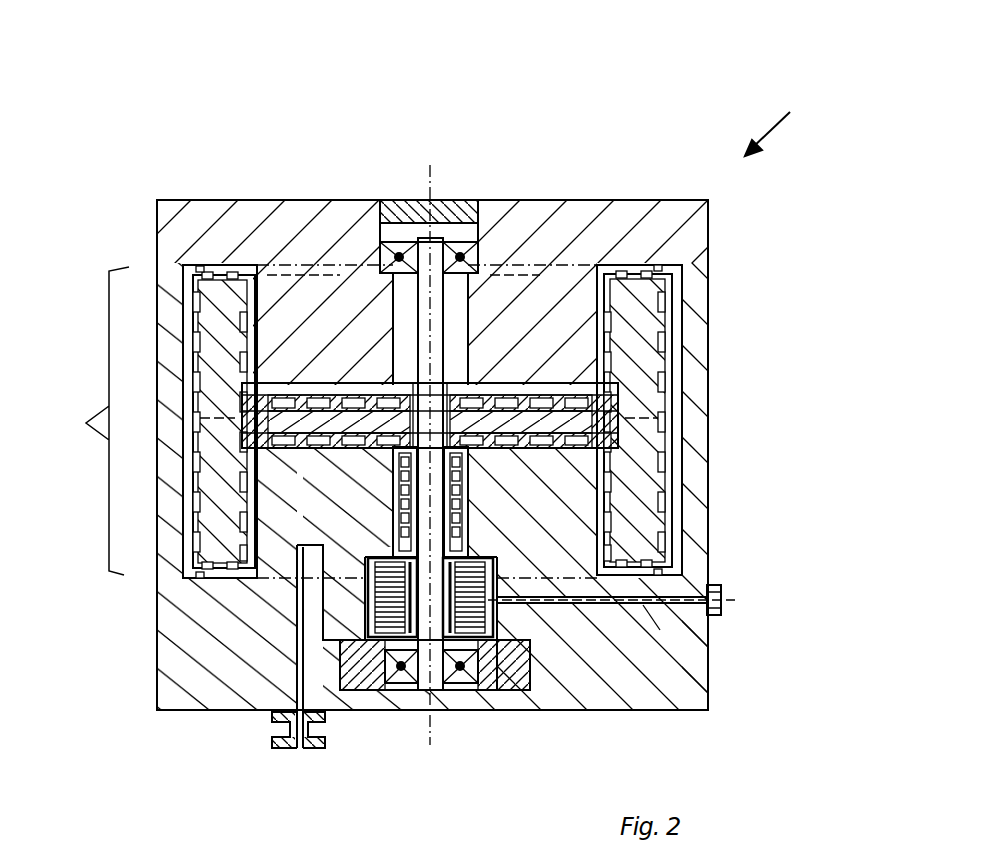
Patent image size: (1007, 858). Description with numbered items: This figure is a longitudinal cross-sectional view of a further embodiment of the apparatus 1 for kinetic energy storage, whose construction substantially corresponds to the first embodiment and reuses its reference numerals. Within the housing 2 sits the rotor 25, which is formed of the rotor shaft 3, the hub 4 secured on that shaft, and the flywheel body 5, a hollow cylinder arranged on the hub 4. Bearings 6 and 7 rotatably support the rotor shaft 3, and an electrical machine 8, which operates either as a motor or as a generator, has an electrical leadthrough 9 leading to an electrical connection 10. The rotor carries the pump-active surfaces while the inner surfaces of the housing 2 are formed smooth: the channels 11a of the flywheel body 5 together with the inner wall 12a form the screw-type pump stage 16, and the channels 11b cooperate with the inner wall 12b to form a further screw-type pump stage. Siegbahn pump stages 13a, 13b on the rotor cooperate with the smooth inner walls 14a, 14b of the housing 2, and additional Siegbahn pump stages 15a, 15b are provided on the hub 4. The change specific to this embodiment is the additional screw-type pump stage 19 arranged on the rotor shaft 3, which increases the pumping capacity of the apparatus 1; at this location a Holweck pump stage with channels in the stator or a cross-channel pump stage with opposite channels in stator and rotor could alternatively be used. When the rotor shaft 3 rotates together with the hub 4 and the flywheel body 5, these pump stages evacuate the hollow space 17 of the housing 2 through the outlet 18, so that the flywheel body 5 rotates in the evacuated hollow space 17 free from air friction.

The apparatus 1 is at (776, 123).
The housing 2 is at (184, 232).
The rotor shaft 3 is at (425, 322).
The hub 4 is at (315, 352).
The flywheel body 5 is at (660, 350).
The bearing 6 is at (545, 395).
The bearing 7 is at (400, 600).
The electrical machine 8 is at (360, 665).
The electrical leadthrough 9 is at (649, 607).
The electrical connection 10 is at (717, 618).
The channels 11a is at (196, 362).
The channels 11b is at (196, 520).
The inner wall 12a is at (185, 268).
The inner wall 12b is at (215, 272).
The Siegbahn pump stage 13a is at (230, 272).
The Siegbahn pump stage 13b is at (205, 572).
The inner wall 14a is at (200, 265).
The inner wall 14b is at (213, 580).
The Siegbahn pump stage 15a is at (318, 393).
The Siegbahn pump stage 15b is at (316, 452).
The screw-type pump stage 16 is at (371, 421).
The hollow space 17 is at (273, 713).
The outlet 18 is at (300, 745).
The additional screw-type pump stage 19 is at (598, 605).
The rotor 25 is at (603, 390).